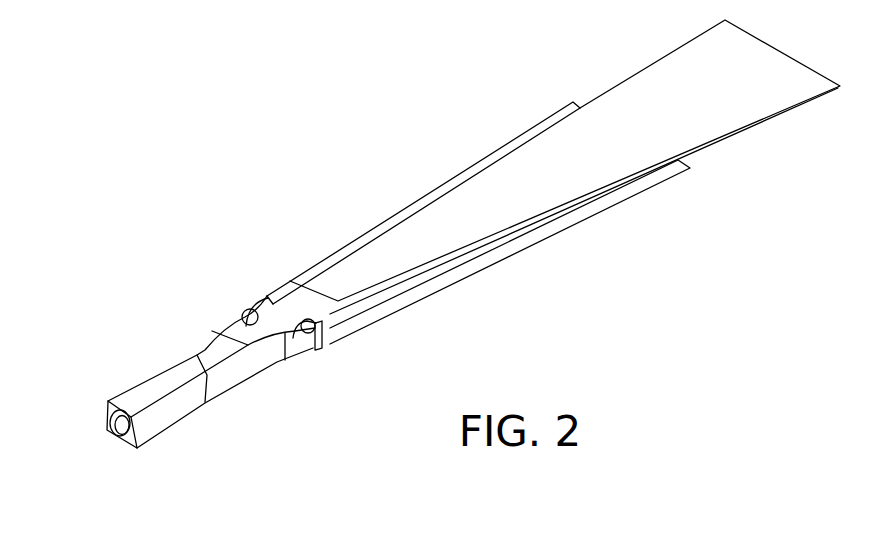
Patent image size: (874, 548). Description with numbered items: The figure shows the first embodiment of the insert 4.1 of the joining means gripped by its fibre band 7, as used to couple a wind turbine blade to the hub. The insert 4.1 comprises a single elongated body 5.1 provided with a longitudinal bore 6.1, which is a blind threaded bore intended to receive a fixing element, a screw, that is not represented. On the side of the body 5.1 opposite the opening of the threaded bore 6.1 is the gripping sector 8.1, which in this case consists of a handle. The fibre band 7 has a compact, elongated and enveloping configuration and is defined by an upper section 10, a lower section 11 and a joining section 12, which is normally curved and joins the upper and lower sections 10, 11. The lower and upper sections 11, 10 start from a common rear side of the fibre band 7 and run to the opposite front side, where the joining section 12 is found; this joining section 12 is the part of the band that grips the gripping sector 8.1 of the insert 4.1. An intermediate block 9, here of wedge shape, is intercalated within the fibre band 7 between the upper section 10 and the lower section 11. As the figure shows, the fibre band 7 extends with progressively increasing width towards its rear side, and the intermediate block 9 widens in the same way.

The insert 4.1 is at (224, 416).
The elongated body 5.1 is at (146, 392).
The longitudinal bore 6.1 is at (122, 421).
The fibre band 7 is at (596, 92).
The gripping sector 8.1 is at (322, 340).
The intermediate block 9 is at (427, 292).
The upper section 10 is at (427, 240).
The lower section 11 is at (703, 155).
The joining section 12 is at (272, 322).